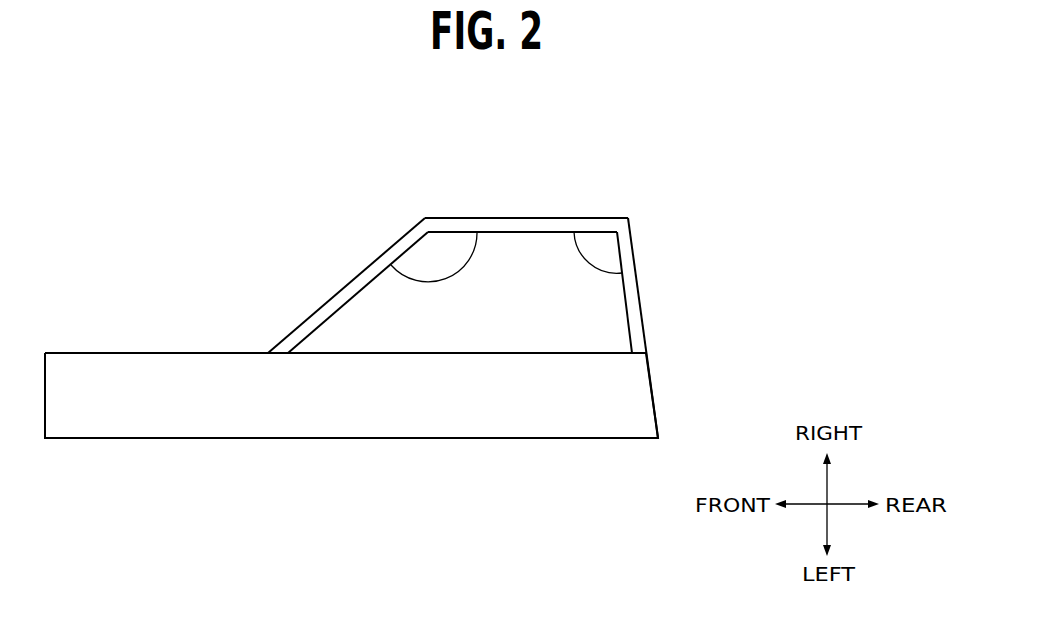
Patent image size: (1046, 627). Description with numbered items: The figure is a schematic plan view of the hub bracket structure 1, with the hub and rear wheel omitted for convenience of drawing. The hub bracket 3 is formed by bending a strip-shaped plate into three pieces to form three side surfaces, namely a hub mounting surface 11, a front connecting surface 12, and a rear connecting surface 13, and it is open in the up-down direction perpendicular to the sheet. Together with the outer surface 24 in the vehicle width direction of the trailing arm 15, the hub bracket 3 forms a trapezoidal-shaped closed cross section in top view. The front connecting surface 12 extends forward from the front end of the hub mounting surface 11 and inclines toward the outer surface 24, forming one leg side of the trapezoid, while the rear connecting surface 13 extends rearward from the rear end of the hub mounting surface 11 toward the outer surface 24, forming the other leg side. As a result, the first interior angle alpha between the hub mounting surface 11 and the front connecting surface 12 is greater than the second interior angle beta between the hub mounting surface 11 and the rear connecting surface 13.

The hub bracket structure 1 is at (682, 182).
The hub bracket 3 is at (617, 138).
The hub mounting surface 11 is at (498, 218).
The front connecting surface 12 is at (358, 278).
The rear connecting surface 13 is at (637, 282).
The trailing arm 15 is at (183, 418).
The outer surface 24 is at (502, 353).